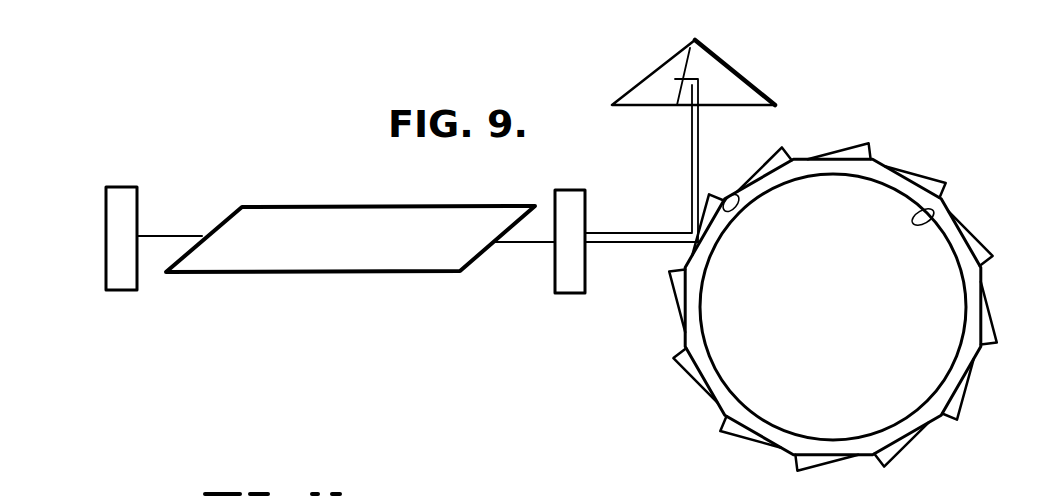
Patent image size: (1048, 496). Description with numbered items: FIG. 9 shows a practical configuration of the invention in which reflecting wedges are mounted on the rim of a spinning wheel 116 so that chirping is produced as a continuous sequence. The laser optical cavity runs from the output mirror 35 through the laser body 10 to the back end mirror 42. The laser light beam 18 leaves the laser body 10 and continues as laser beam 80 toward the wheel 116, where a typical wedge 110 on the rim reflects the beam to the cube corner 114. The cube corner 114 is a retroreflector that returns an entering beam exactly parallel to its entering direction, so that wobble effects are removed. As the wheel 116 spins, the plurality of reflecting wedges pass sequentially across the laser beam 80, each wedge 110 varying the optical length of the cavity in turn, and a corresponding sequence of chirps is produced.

The output mirror 35 is at (137, 187).
The laser light beam 18 is at (167, 236).
The laser body 10 is at (410, 272).
The back end mirror 42 is at (552, 293).
The laser beam 80 is at (648, 237).
The cube corner 114 is at (753, 80).
The wedge 110 is at (740, 191).
The spinning wheel 116 is at (934, 220).